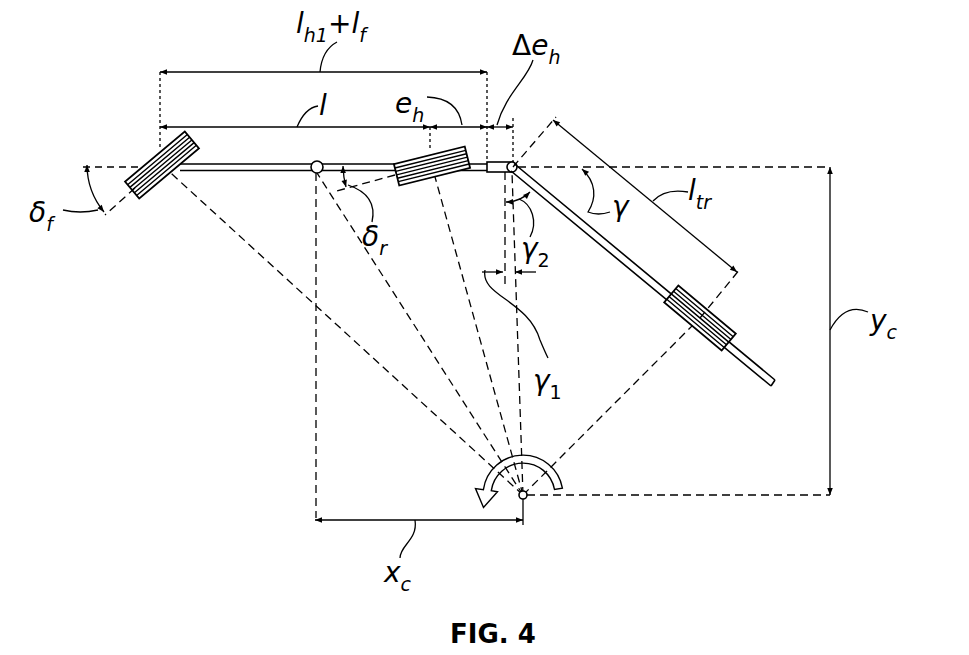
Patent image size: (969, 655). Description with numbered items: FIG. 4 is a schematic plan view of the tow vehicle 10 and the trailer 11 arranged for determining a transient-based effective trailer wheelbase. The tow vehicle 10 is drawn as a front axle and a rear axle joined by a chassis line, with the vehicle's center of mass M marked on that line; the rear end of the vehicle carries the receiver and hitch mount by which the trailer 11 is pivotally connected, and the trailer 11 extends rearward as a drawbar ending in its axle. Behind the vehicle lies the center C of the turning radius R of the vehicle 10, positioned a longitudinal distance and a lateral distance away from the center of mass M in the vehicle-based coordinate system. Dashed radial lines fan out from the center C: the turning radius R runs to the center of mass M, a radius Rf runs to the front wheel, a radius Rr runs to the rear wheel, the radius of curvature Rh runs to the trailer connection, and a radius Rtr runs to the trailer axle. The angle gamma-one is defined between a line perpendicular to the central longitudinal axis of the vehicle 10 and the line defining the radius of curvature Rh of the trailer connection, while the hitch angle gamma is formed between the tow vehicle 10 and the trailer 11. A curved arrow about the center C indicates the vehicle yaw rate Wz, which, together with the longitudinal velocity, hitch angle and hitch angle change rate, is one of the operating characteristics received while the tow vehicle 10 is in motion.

The tow vehicle 10 is at (160, 44).
The trailer 11 is at (760, 140).
The center of mass M is at (310, 170).
The center of the turning radius C is at (528, 498).
The front wheel turning radius Rf is at (290, 287).
The turning radius R is at (397, 290).
The rear wheel turning radius Rr is at (460, 270).
The radius of curvature of the trailer connection Rh is at (512, 288).
The trailer turning radius Rtr is at (623, 394).
The vehicle yaw rate Wz is at (481, 484).